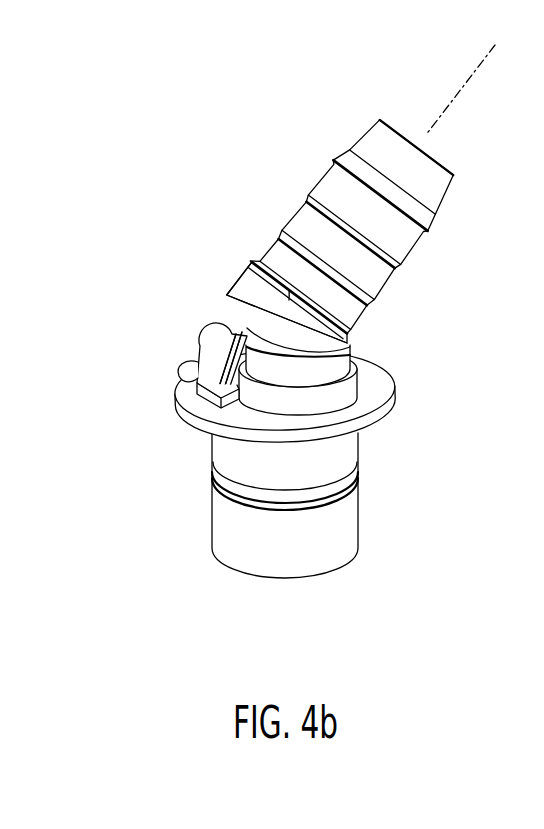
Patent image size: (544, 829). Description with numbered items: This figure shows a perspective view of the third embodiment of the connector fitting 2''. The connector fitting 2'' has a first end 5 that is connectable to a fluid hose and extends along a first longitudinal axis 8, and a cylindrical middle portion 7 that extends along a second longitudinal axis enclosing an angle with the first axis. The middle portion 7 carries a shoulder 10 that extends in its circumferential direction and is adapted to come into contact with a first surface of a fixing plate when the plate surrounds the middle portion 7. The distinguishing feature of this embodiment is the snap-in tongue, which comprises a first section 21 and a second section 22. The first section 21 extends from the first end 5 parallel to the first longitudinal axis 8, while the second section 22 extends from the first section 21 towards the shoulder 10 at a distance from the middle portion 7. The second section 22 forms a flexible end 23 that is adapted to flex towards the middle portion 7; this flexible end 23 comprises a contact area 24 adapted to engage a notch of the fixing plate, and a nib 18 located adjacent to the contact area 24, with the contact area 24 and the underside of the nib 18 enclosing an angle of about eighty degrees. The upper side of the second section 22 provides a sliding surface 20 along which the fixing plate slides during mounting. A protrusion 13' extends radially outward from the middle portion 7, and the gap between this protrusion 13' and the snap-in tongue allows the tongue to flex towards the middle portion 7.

The connector fitting 2'' is at (258, 274).
The first end 5 is at (273, 183).
The middle portion 7 is at (406, 360).
The first longitudinal axis 8 is at (482, 60).
The shoulder 10 is at (378, 382).
The protrusion 13' is at (256, 410).
The nib 18 is at (196, 378).
The sliding surface 20 is at (208, 350).
The first section 21 is at (219, 283).
The second section 22 is at (174, 347).
The flexible end 23 is at (230, 362).
The contact area 24 is at (186, 394).